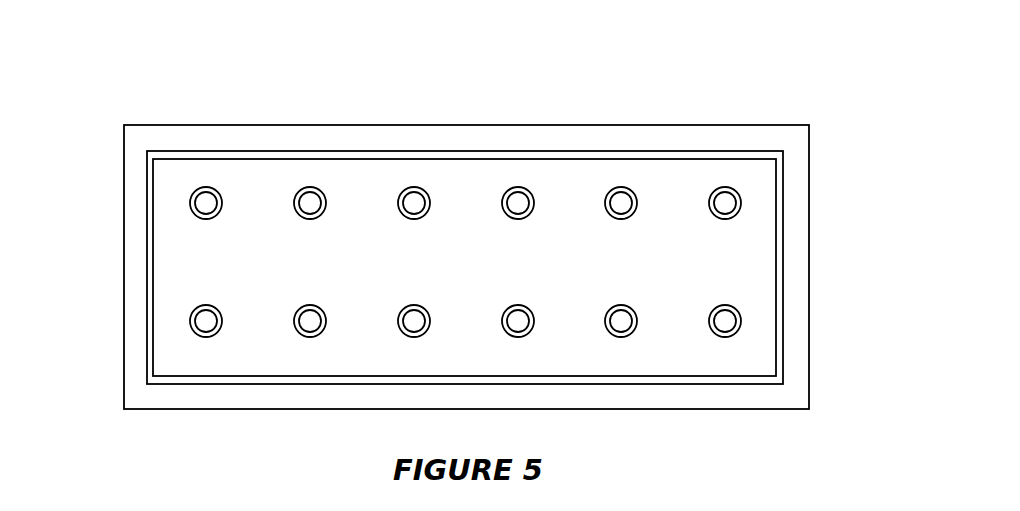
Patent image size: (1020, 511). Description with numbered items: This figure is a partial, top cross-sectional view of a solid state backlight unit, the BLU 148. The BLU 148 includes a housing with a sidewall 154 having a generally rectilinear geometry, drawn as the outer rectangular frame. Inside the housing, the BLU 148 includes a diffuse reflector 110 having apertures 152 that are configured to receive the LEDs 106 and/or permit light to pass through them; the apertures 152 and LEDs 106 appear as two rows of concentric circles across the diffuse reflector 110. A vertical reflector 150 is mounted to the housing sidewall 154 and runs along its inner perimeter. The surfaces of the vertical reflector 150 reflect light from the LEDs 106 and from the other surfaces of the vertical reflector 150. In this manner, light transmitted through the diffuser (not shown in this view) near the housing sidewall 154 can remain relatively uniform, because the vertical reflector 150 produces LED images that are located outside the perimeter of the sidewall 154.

The BLU 148 is at (718, 64).
The vertical reflector 150 is at (150, 173).
The housing sidewall 154 is at (645, 143).
The diffuse reflector 110 is at (247, 178).
The apertures 152 is at (313, 187).
The LEDs 106 is at (520, 187).